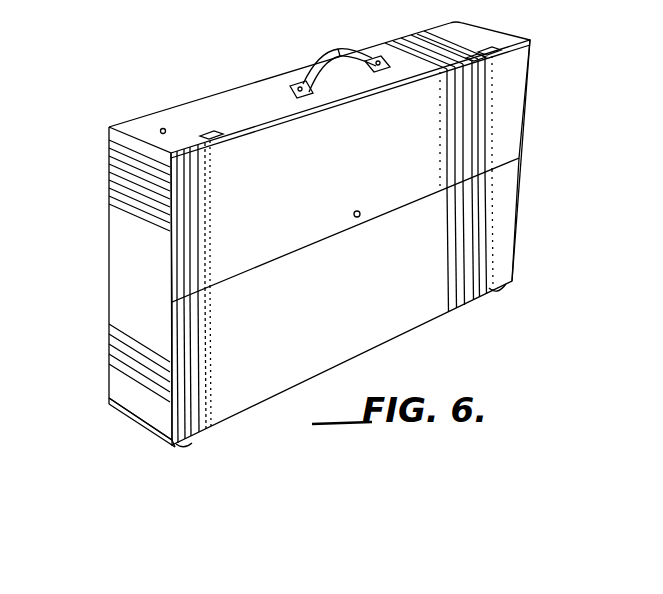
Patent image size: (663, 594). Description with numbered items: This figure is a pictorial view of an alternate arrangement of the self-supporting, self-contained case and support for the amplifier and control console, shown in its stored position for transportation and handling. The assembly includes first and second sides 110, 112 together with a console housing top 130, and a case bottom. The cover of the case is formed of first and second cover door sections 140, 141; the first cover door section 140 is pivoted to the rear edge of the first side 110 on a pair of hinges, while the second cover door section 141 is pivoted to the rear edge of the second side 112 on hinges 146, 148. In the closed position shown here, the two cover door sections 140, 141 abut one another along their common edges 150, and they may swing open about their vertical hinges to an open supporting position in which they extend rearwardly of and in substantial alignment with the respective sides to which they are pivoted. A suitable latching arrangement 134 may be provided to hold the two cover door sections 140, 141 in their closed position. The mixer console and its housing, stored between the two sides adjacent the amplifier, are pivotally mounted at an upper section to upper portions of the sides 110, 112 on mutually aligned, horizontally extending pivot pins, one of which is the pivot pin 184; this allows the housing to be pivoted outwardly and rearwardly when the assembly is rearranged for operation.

The first side 110 is at (153, 437).
The second side 112 is at (258, 87).
The console housing top 130 is at (112, 242).
The latching arrangement 134 is at (355, 211).
The first cover door section 140 is at (512, 234).
The second cover door section 141 is at (513, 100).
The hinge 146 is at (215, 132).
The hinge 148 is at (482, 45).
The common edges 150 is at (395, 213).
The pivot pin 184 is at (160, 130).